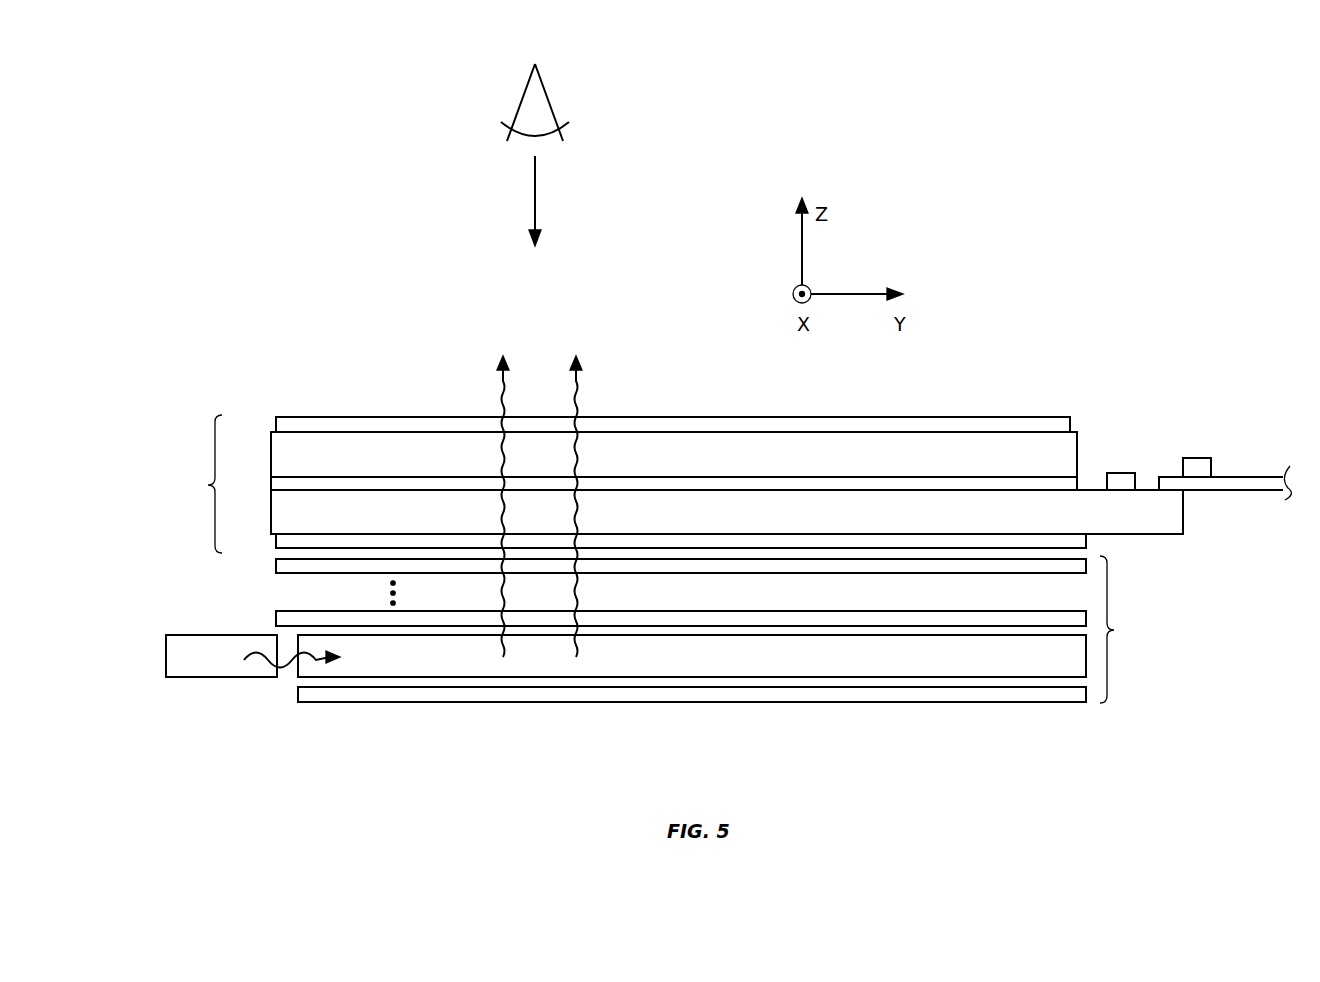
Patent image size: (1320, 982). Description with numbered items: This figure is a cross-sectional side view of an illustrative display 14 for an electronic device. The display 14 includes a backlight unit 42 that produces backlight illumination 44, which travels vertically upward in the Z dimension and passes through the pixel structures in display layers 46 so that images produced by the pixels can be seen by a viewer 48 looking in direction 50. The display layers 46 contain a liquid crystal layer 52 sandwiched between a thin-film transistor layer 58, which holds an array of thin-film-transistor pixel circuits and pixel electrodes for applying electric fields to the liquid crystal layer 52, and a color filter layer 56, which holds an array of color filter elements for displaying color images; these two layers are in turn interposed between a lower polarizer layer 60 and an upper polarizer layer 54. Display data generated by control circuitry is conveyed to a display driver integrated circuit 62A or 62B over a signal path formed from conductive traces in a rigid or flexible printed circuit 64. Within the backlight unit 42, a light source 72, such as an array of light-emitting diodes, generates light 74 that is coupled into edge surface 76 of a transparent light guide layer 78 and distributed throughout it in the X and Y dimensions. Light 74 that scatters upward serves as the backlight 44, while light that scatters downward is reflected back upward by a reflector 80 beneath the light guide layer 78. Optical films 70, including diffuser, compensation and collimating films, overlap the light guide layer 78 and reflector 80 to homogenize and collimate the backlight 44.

The display 14 is at (1115, 206).
The backlight unit 42 is at (1120, 629).
The backlight illumination 44 is at (571, 396).
The display layers 46 is at (202, 484).
The viewer 48 is at (548, 99).
The viewing direction 50 is at (535, 205).
The liquid crystal layer 52 is at (349, 483).
The upper polarizer layer 54 is at (298, 421).
The color filter layer 56 is at (279, 452).
The thin-film transistor layer 58 is at (279, 505).
The lower polarizer layer 60 is at (277, 544).
The display driver integrated circuit 62A is at (1117, 470).
The display driver integrated circuit 62B is at (1200, 455).
The printed circuit 64 is at (1238, 485).
The optical films 70 is at (278, 617).
The light source 72 is at (175, 657).
The light 74 is at (260, 659).
The edge surface 76 is at (297, 668).
The light guide layer 78 is at (387, 668).
The reflector 80 is at (475, 699).